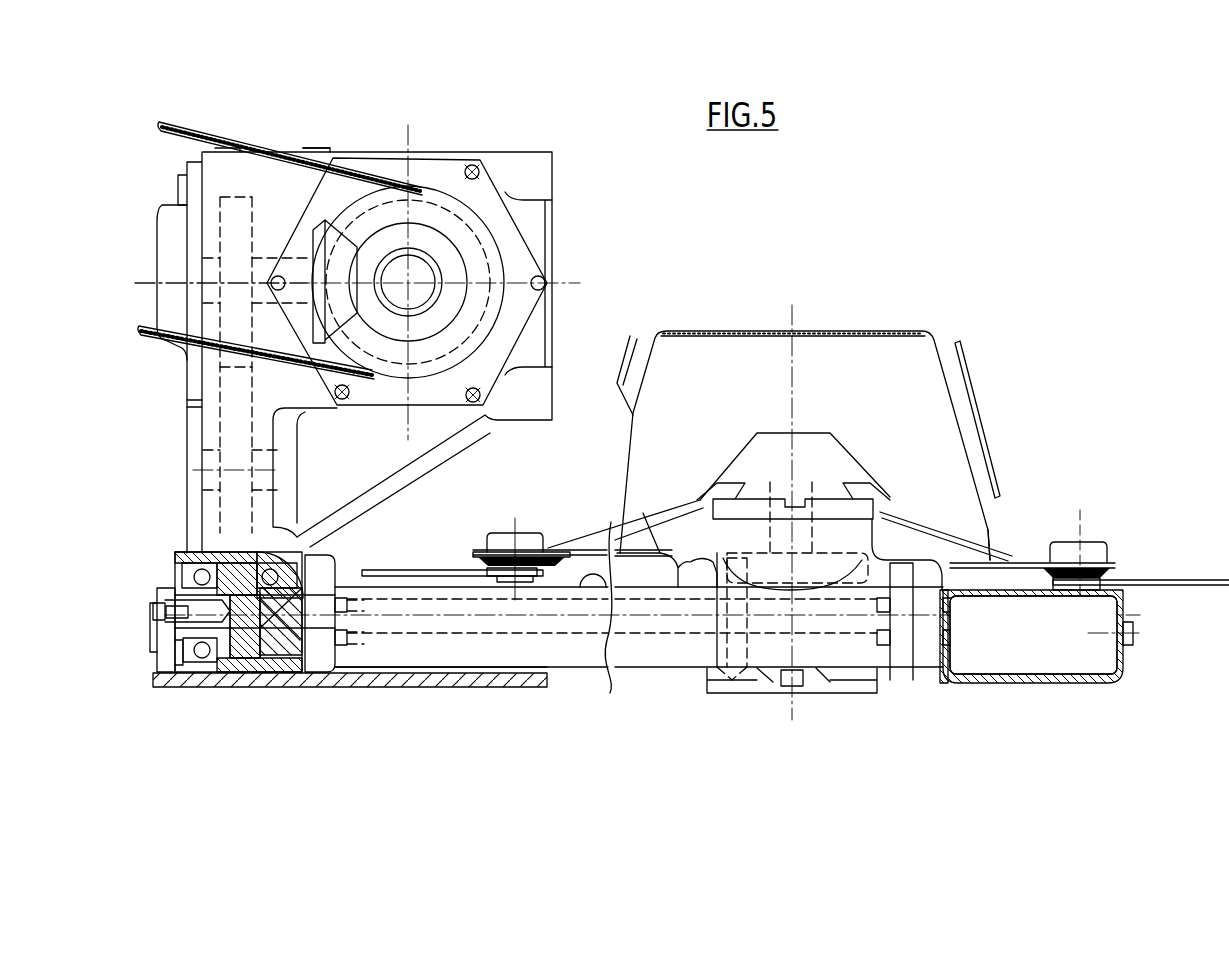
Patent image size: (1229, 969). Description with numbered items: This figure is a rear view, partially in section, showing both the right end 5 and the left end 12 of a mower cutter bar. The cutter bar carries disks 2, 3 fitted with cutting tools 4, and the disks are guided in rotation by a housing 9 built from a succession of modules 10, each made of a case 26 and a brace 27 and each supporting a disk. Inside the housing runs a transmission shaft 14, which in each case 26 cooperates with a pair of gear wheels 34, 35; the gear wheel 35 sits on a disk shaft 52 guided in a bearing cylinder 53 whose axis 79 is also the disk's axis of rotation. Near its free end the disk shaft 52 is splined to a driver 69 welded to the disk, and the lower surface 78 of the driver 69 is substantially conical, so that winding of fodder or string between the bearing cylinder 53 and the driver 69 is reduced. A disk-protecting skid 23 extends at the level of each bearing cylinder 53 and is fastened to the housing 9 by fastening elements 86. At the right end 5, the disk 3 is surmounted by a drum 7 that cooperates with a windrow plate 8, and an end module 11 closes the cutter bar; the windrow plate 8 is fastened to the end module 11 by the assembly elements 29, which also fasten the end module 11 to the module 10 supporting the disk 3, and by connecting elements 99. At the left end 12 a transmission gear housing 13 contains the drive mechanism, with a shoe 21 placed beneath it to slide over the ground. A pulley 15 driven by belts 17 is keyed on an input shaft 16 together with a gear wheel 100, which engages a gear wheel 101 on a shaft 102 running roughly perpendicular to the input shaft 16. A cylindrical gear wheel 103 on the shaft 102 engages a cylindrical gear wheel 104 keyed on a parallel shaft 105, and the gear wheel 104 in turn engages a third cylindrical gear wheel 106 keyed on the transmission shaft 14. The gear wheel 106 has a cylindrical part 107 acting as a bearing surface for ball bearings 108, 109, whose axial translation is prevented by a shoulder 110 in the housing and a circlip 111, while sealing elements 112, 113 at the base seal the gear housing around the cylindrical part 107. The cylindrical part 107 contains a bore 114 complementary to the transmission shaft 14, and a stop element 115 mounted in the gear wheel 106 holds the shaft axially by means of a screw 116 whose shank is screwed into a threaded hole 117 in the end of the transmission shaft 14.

The disk 2 is at (586, 548).
The disk 3 is at (992, 553).
The cutting tools 4 is at (434, 570).
The right end 5 is at (1102, 416).
The drum 7 is at (925, 330).
The windrow plate 8 is at (1036, 684).
The housing 9 is at (632, 670).
The module 10 is at (566, 668).
The end module 11 is at (1090, 662).
The left end 12 is at (349, 153).
The transmission gear housing 13 is at (440, 158).
The transmission shaft 14 is at (479, 620).
The pulley 15 is at (503, 307).
The input shaft 16 is at (440, 273).
The belts 17 is at (188, 123).
The shoe 21 is at (402, 688).
The disk-protecting skid 23 is at (736, 694).
The case 26 is at (875, 546).
The brace 27 is at (512, 650).
The assembly elements 29 is at (345, 607).
The gear wheel 34 is at (738, 647).
The gear wheel 35 is at (837, 567).
The disk shaft 52 is at (820, 483).
The bearing cylinder 53 is at (715, 542).
The driver 69 is at (766, 441).
The lower surface 78 is at (908, 517).
The axis 79 is at (790, 316).
The fastening elements 86 is at (595, 587).
The connecting elements 99 is at (1136, 635).
The gear wheel 100 is at (485, 248).
The gear wheel 101 is at (326, 237).
The shaft 102 is at (264, 265).
The cylindrical gear wheel 103 is at (233, 203).
The cylindrical gear wheel 104 is at (207, 385).
The shaft 105 is at (210, 452).
The cylindrical gear wheel 106 is at (240, 652).
The cylindrical part 107 is at (190, 662).
The ball bearing 108 is at (203, 660).
The ball bearing 109 is at (262, 567).
The shoulder 110 is at (290, 565).
The circlip 111 is at (178, 560).
The sealing element 112 is at (196, 638).
The sealing element 113 is at (306, 557).
The bore 114 is at (170, 590).
The stop element 115 is at (166, 613).
The screw 116 is at (182, 618).
The threaded hole 117 is at (266, 652).